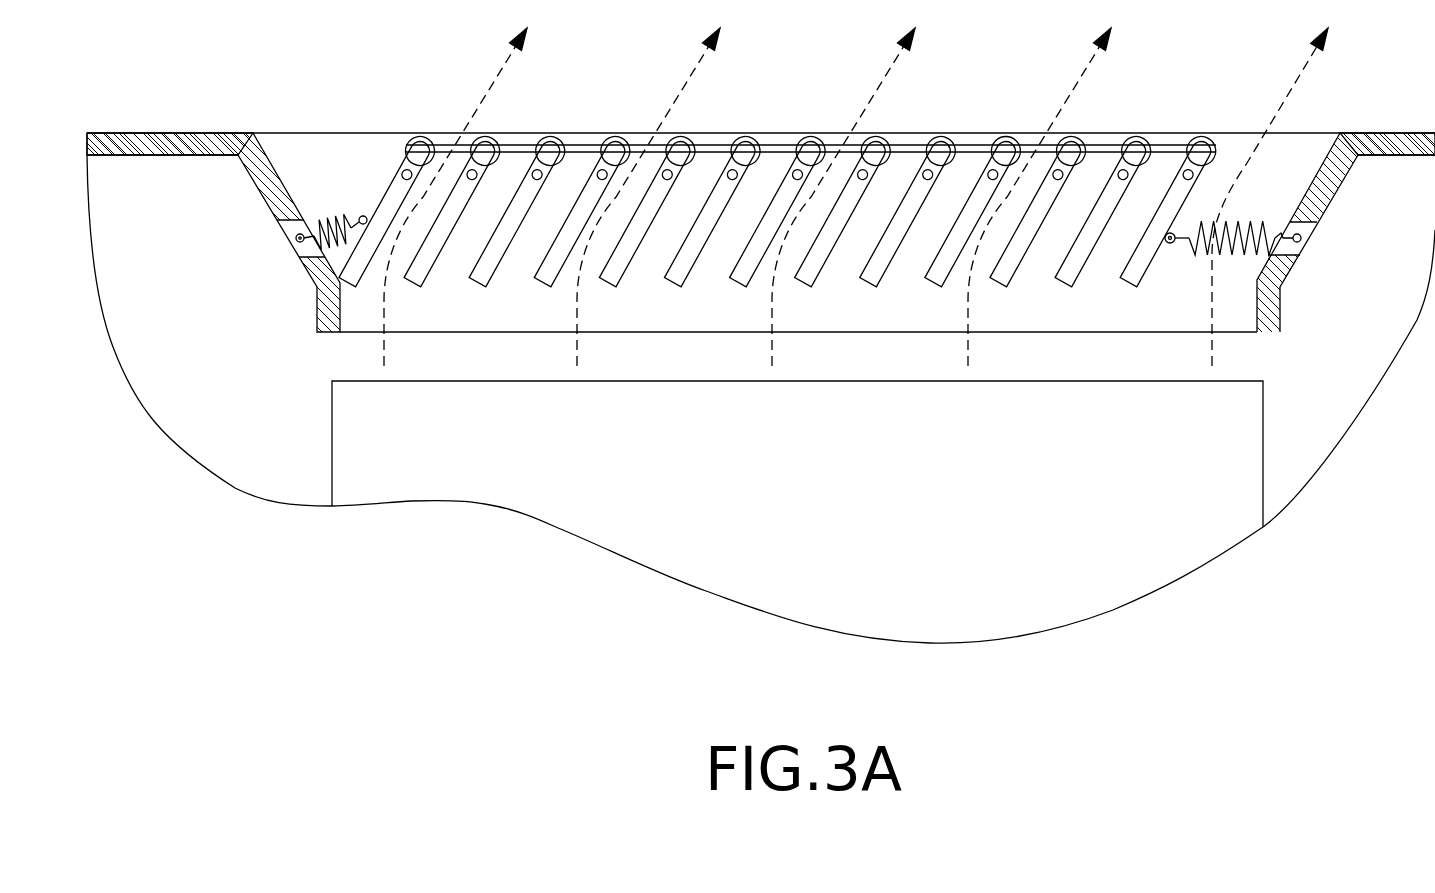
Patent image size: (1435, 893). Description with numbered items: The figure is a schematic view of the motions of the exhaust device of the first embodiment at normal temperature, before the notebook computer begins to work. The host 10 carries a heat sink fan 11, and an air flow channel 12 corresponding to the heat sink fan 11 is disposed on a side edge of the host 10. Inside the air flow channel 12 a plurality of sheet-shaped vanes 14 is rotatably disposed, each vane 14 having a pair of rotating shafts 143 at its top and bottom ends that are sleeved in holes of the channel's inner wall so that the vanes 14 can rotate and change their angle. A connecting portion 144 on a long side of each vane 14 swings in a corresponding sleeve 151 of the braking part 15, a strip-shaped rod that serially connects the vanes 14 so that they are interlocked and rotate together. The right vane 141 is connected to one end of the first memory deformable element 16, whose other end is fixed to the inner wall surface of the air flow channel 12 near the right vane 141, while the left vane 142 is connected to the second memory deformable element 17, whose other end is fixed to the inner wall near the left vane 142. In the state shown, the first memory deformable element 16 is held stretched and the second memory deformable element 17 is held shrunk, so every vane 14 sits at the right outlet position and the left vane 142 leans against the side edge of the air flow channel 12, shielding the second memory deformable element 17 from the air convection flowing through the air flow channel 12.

The host 10 is at (123, 133).
The heat sink fan 11 is at (1235, 457).
The air flow channel 12 is at (311, 180).
The vane 14 is at (581, 192).
The right vane 141 is at (1183, 198).
The left vane 142 is at (390, 193).
The rotating shaft 143 is at (790, 177).
The connecting portion 144 is at (1000, 165).
The braking part 15 is at (1108, 133).
The sleeve 151 is at (1002, 152).
The first memory deformable element 16 is at (1258, 220).
The second memory deformable element 17 is at (332, 217).